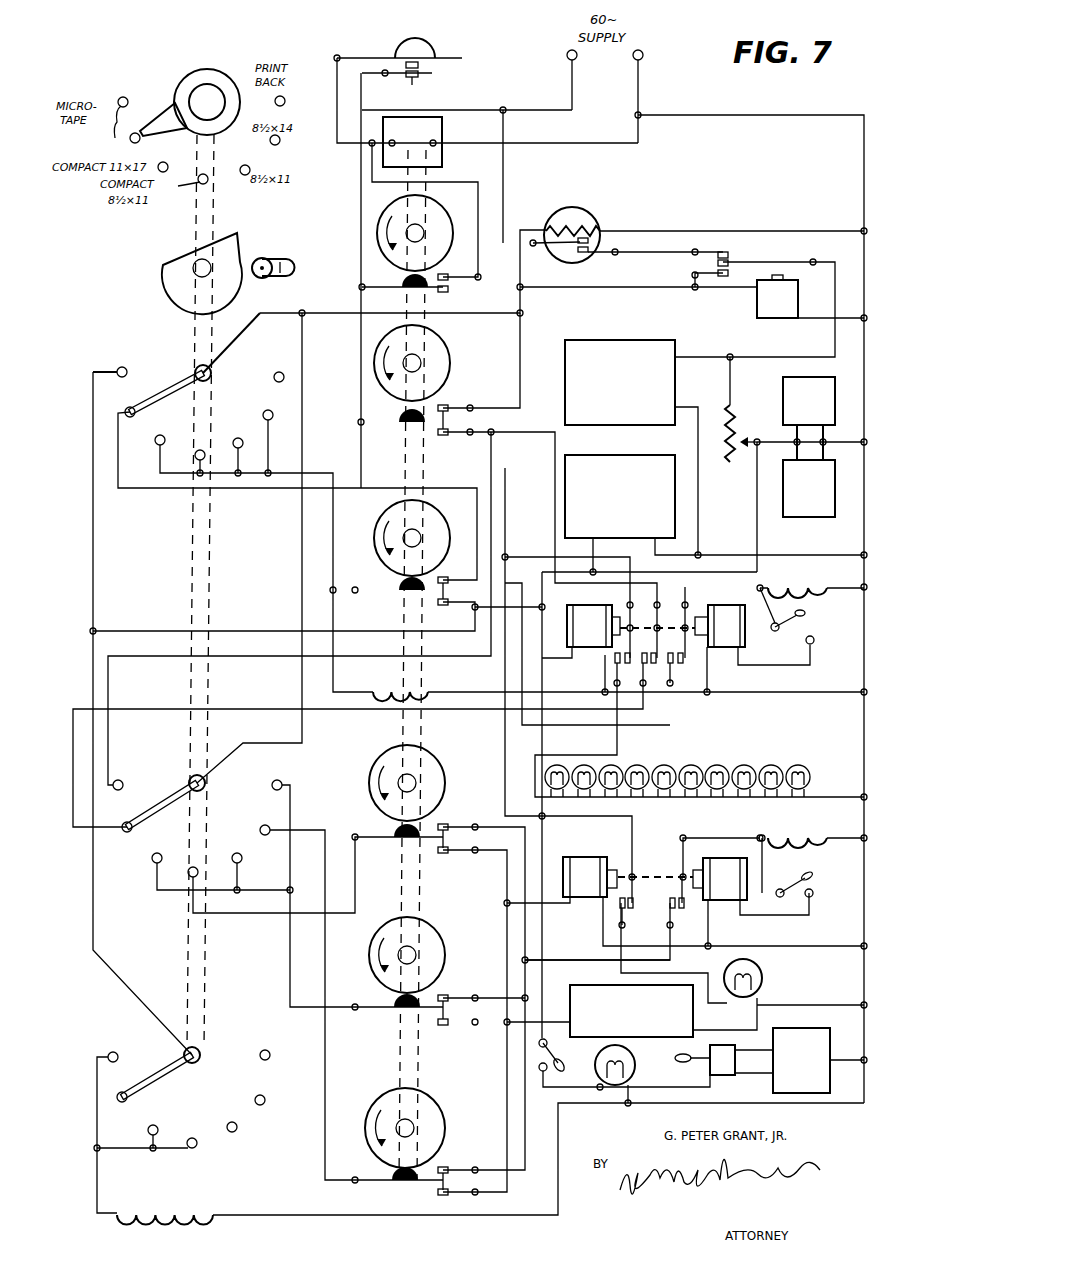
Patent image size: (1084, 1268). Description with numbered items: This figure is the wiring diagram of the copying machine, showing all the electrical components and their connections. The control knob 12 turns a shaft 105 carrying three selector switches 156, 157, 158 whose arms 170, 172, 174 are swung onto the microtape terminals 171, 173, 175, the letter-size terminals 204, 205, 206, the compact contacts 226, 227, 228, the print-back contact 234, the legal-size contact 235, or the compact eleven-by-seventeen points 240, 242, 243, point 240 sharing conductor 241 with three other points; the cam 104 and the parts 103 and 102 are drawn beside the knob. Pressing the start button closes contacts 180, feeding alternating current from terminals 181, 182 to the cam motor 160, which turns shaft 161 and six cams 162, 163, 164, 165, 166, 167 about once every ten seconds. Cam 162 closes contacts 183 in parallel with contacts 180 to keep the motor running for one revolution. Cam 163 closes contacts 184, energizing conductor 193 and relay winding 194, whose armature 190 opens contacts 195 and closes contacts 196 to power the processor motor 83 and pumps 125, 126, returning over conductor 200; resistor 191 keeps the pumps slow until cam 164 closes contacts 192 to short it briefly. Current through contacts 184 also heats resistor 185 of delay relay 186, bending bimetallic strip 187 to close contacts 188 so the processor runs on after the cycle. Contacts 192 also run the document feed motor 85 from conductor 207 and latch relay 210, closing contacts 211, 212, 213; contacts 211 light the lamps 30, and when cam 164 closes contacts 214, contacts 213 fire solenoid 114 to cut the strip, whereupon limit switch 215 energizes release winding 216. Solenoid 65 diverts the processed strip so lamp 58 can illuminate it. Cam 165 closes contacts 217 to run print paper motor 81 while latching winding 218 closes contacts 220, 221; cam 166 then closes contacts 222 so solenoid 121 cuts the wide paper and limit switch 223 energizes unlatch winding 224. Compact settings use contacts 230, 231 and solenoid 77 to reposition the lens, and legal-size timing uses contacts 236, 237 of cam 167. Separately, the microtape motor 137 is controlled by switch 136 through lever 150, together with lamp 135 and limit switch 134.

The control knob 12 is at (210, 82).
The switch 103 is at (266, 258).
The contacts 180 is at (412, 77).
The cam 104 is at (170, 262).
The shaft 105 is at (214, 205).
The switch actuator 102 is at (275, 277).
The selector switch 156 is at (135, 326).
The selector switch 157 is at (163, 742).
The selector switch 158 is at (118, 1026).
The arm 170 is at (180, 378).
The terminal 171 is at (125, 366).
The arm 172 is at (165, 805).
The contact 173 is at (122, 779).
The arm 174 is at (152, 1078).
The terminal 175 is at (118, 1045).
The cam motor 160 is at (442, 130).
The shaft 161 is at (438, 173).
The cam 162 is at (440, 218).
The cam 163 is at (440, 345).
The cam 164 is at (437, 520).
The cam 165 is at (444, 780).
The cam 166 is at (438, 925).
The cam 167 is at (436, 1108).
The contacts 183 is at (446, 292).
The contacts 184 is at (447, 404).
The contacts 214 is at (445, 579).
The contacts 192 is at (442, 607).
The contacts 230 is at (448, 824).
The contacts 231 is at (444, 855).
The contacts 222 is at (448, 996).
The contacts 217 is at (444, 1026).
The contacts 236 is at (448, 1166).
The contacts 237 is at (444, 1196).
The terminal 181 is at (566, 54).
The terminal 182 is at (644, 54).
The conductor 207 is at (361, 220).
The delay relay 186 is at (585, 205).
The resistor 185 is at (585, 222).
The bimetallic strip 187 is at (566, 246).
The contacts 188 is at (588, 254).
The conductor 193 is at (625, 289).
The contacts 195 is at (726, 252).
The contacts 196 is at (720, 277).
The armature 190 is at (813, 260).
The conductor 200 is at (864, 290).
The relay winding 194 is at (770, 318).
The processor motor 83 is at (617, 338).
The document feed motor 85 is at (626, 452).
The resistor 191 is at (742, 432).
The pump 125 is at (780, 380).
The pump 126 is at (800, 517).
The solenoid 114 is at (810, 570).
The limit switch 215 is at (802, 618).
The latching relay 210 is at (590, 640).
The release winding 216 is at (730, 640).
The contacts 211 is at (612, 662).
The contacts 212 is at (656, 664).
The contacts 213 is at (683, 660).
The solenoid 65 is at (384, 686).
The lamps 30 is at (670, 762).
The solenoid 121 is at (808, 836).
The latching relay winding 218 is at (585, 870).
The unlatch relay winding 224 is at (728, 870).
The contacts 220 is at (632, 905).
The contacts 221 is at (672, 907).
The limit switch 223 is at (795, 868).
The lamp 58 is at (764, 970).
The motor 81 is at (693, 1018).
The microtape feed motor 137 is at (818, 1030).
The limit switch 134 is at (552, 1042).
The lamp 135 is at (628, 1055).
The lever 150 is at (688, 1064).
The switch 136 is at (720, 1078).
The solenoid 77 is at (182, 1212).
The contact point 240 is at (155, 442).
The contact 226 is at (195, 455).
The terminal 204 is at (250, 436).
The contact 234 is at (277, 779).
The contact 235 is at (266, 824).
The terminal 205 is at (237, 852).
The contact 227 is at (190, 868).
The contact point 242 is at (152, 860).
The terminal 206 is at (230, 1121).
The contact 228 is at (197, 1146).
The contact point 243 is at (120, 1100).
The conductor 241 is at (335, 540).